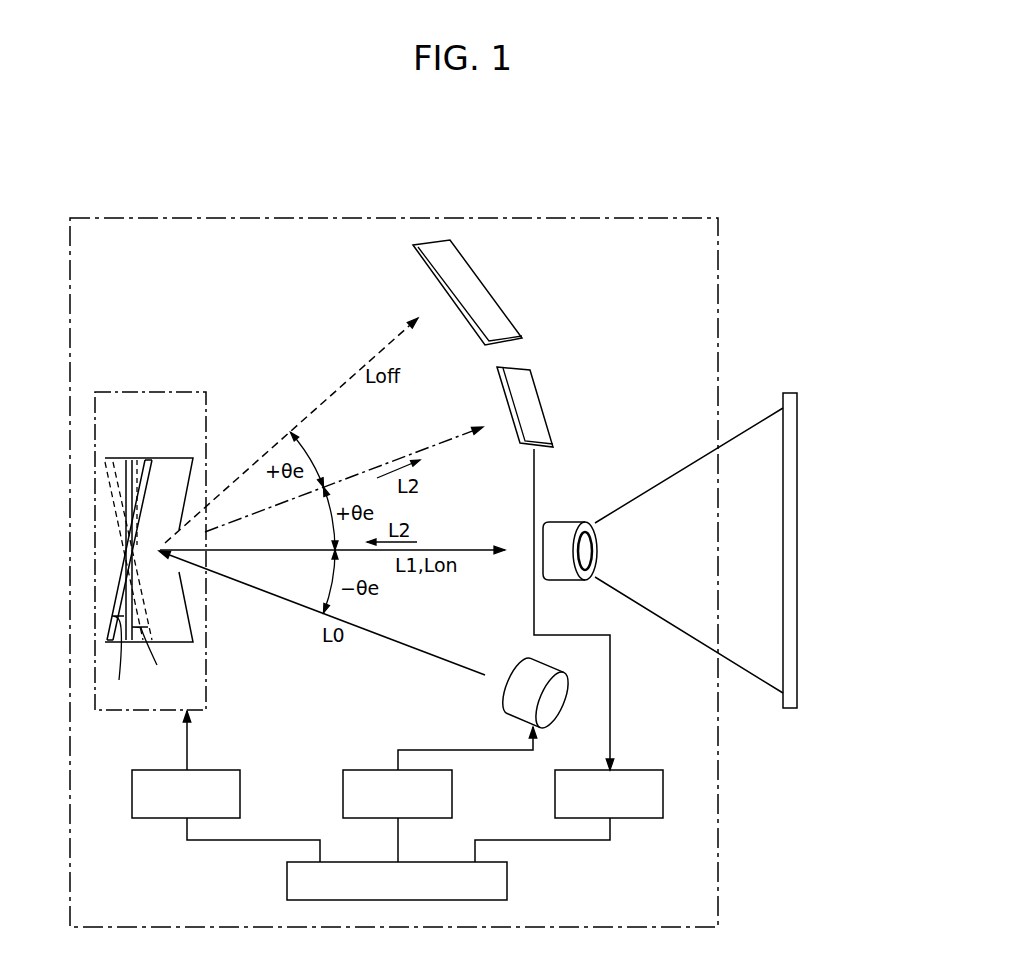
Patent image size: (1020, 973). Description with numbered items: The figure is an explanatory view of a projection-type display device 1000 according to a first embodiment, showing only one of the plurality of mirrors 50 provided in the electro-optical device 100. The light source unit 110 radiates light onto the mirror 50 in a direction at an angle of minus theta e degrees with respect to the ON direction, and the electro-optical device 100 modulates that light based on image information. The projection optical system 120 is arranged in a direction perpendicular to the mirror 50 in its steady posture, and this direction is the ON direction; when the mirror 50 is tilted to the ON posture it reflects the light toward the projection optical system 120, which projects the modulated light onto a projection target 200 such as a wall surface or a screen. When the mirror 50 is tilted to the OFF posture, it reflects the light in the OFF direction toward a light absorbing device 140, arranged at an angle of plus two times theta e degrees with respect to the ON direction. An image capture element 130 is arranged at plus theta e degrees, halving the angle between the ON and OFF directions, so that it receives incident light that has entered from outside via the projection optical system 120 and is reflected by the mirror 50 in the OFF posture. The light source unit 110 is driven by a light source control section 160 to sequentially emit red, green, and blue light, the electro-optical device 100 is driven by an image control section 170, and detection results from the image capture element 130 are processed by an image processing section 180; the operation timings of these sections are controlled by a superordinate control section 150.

The projection-type display device 1000 is at (690, 218).
The electro-optical device 100 is at (206, 527).
The mirror 50 is at (124, 546).
The light source unit 110 is at (508, 702).
The projection optical system 120 is at (573, 520).
The image capture element 130 is at (541, 408).
The light absorbing device 140 is at (496, 303).
The superordinate control section 150 is at (507, 880).
The light source control section 160 is at (360, 770).
The image control section 170 is at (227, 770).
The image processing section 180 is at (637, 770).
The projection target 200 is at (797, 502).